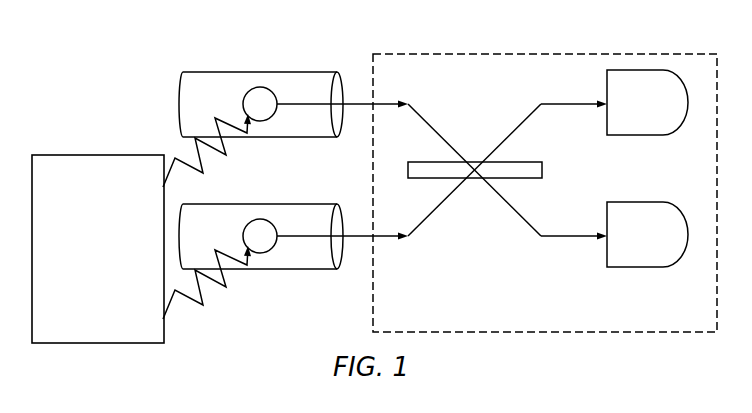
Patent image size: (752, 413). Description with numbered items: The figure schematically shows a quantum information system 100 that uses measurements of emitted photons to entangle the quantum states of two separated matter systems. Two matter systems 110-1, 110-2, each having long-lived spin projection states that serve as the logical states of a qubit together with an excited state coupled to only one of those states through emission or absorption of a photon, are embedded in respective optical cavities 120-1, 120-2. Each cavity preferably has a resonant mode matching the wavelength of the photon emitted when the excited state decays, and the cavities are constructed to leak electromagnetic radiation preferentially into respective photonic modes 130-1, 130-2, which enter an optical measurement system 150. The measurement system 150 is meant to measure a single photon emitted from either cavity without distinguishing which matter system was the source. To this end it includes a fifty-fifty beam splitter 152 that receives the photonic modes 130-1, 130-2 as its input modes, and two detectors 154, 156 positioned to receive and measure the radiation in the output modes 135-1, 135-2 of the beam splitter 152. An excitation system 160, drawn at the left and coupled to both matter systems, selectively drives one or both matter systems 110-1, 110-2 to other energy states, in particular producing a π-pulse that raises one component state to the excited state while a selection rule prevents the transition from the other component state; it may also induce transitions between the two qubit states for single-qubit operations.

The quantum information system 100 is at (496, 29).
The first matter system 110-1 is at (263, 87).
The second matter system 110-2 is at (265, 219).
The first optical cavity 120-1 is at (191, 106).
The second optical cavity 120-2 is at (191, 235).
The first photonic mode 130-1 is at (383, 103).
The second photonic mode 130-2 is at (384, 238).
The first output mode 135-1 is at (557, 103).
The second output mode 135-2 is at (557, 238).
The optical measurement system 150 is at (531, 323).
The 50-50 beam splitter 152 is at (525, 162).
The first detector 154 is at (633, 113).
The second detector 156 is at (633, 245).
The excitation system 160 is at (83, 285).